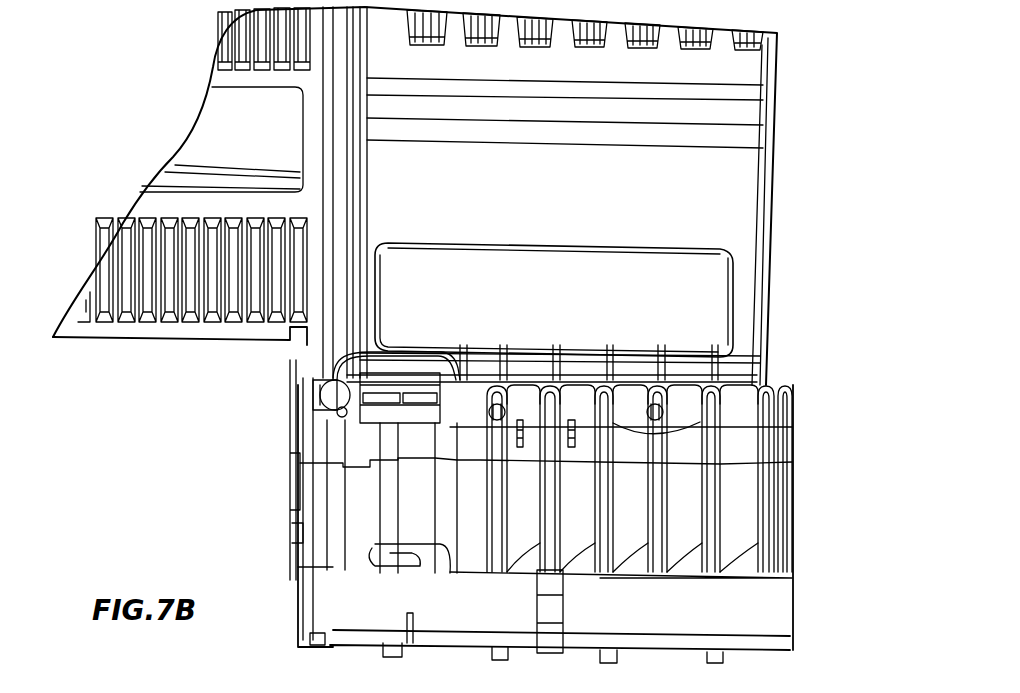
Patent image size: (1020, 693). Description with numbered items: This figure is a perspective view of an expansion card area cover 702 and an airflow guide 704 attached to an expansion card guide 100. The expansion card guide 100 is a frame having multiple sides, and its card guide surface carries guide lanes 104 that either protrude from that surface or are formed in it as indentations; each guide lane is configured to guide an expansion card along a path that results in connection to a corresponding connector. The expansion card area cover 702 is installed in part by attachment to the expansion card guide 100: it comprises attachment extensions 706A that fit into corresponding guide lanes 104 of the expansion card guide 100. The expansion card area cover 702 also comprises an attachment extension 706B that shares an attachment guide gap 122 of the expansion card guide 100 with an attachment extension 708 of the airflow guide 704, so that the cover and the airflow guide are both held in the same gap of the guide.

The expansion card guide 100 is at (753, 605).
The guide lanes 104 is at (713, 414).
The attachment guide gap 122 is at (297, 383).
The expansion card area cover 702 is at (415, 196).
The airflow guide 704 is at (177, 323).
The attachment extensions 706A is at (656, 404).
The attachment extension 706B is at (340, 410).
The attachment extension 708 is at (295, 400).